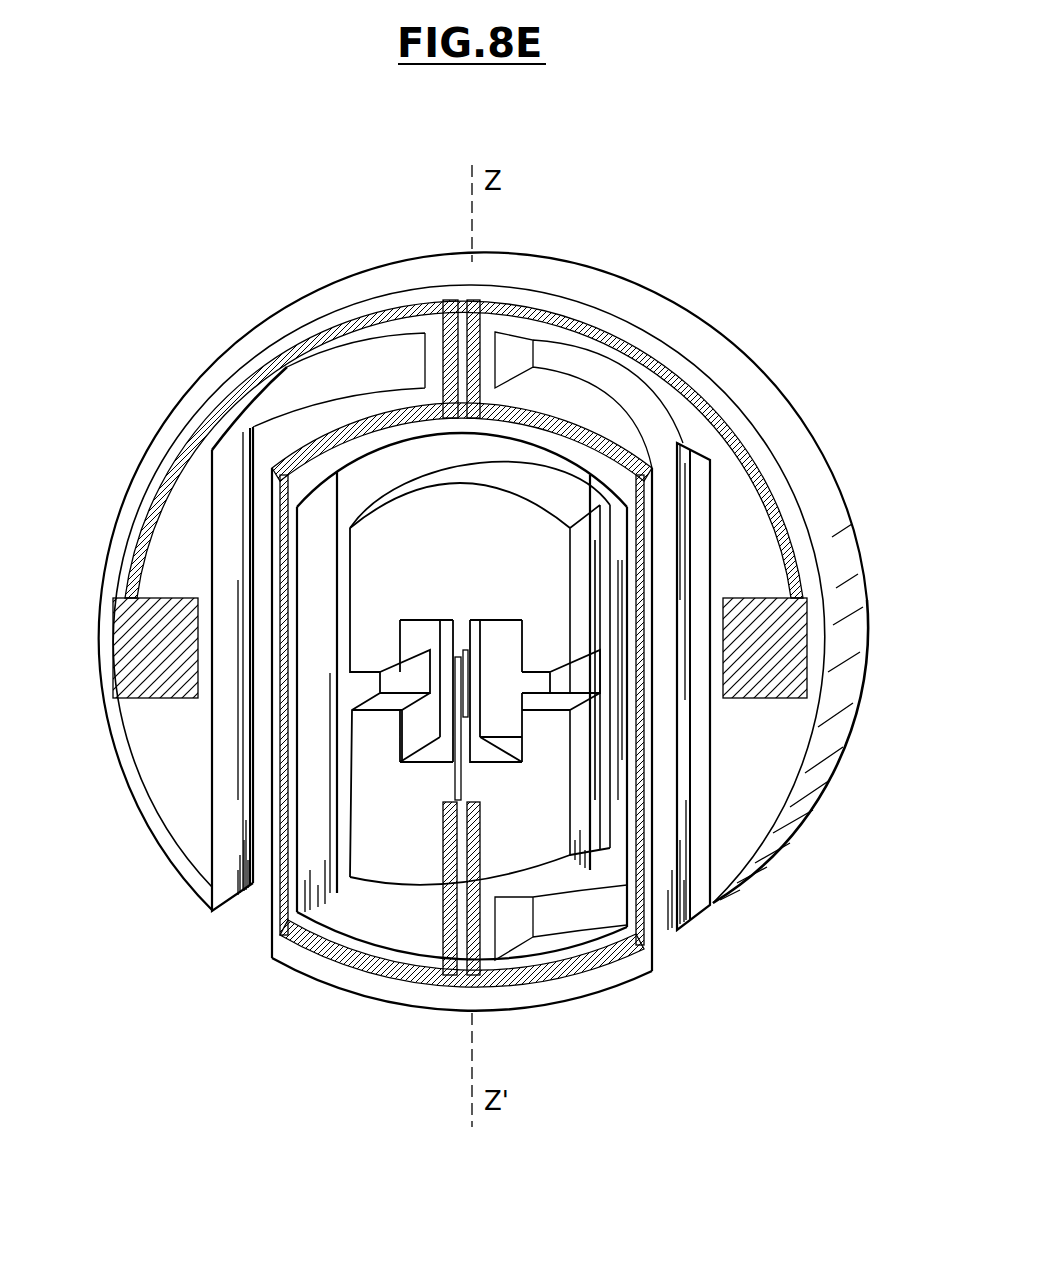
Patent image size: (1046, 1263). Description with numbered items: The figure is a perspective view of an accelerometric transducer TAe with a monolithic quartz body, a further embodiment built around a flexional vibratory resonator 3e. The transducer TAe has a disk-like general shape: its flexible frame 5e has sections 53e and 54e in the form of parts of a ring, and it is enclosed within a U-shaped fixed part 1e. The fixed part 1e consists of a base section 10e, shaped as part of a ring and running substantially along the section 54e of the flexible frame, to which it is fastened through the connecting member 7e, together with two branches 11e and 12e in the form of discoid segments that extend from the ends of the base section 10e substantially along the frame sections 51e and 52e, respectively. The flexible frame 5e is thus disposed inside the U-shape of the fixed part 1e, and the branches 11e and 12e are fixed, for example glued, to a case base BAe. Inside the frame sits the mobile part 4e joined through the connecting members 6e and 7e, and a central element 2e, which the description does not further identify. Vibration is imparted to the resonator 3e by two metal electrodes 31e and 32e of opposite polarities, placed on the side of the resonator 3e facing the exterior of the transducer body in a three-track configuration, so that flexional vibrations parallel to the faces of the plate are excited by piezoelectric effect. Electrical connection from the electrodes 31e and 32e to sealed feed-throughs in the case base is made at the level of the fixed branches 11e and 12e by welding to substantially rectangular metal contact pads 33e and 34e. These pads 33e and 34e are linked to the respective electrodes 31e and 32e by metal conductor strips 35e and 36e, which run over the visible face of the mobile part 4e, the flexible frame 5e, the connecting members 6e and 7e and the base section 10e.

The fixed part 1e is at (728, 285).
The base section 10e is at (573, 283).
The branch 11e is at (150, 793).
The branch 12e is at (805, 803).
The transducer TAe is at (320, 267).
The case base BAe is at (142, 902).
The connecting member 7e is at (430, 352).
The central body 2e is at (398, 537).
The resonator 3e is at (477, 722).
The metal electrode 31e is at (460, 780).
The metal electrode 32e is at (470, 793).
The metal contact pad 33e is at (162, 676).
The metal contact pad 34e is at (787, 653).
The metal conductor strip 35e is at (445, 882).
The metal conductor strip 36e is at (480, 880).
The mobile part 4e is at (593, 850).
The flexible frame 5e is at (585, 1015).
The connecting member 6e is at (517, 922).
The frame section 51e is at (270, 903).
The frame section 52e is at (677, 887).
The frame section 53e is at (360, 985).
The frame section 54e is at (313, 443).